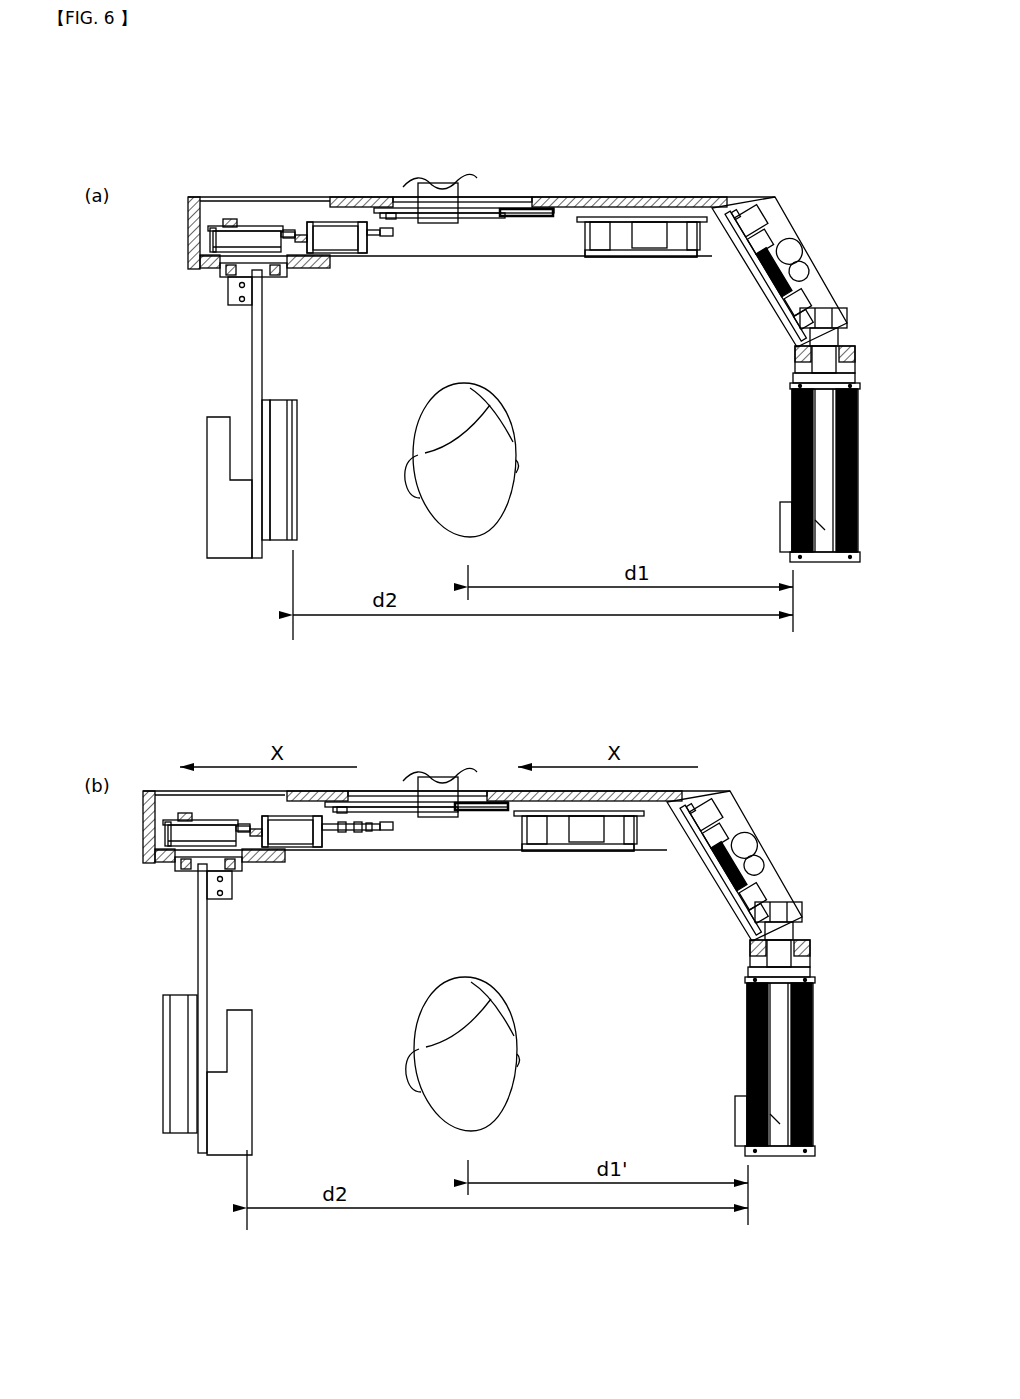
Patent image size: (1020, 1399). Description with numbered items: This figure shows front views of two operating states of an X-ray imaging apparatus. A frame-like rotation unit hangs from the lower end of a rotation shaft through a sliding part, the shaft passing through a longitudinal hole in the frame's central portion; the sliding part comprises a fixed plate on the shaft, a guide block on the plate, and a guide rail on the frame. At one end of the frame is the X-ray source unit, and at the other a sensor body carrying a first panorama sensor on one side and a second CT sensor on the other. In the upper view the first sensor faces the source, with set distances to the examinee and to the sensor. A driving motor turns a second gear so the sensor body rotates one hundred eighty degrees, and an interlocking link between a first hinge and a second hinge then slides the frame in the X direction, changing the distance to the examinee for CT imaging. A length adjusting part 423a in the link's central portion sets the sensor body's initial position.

The length adjusting part 423a is at (337, 826).